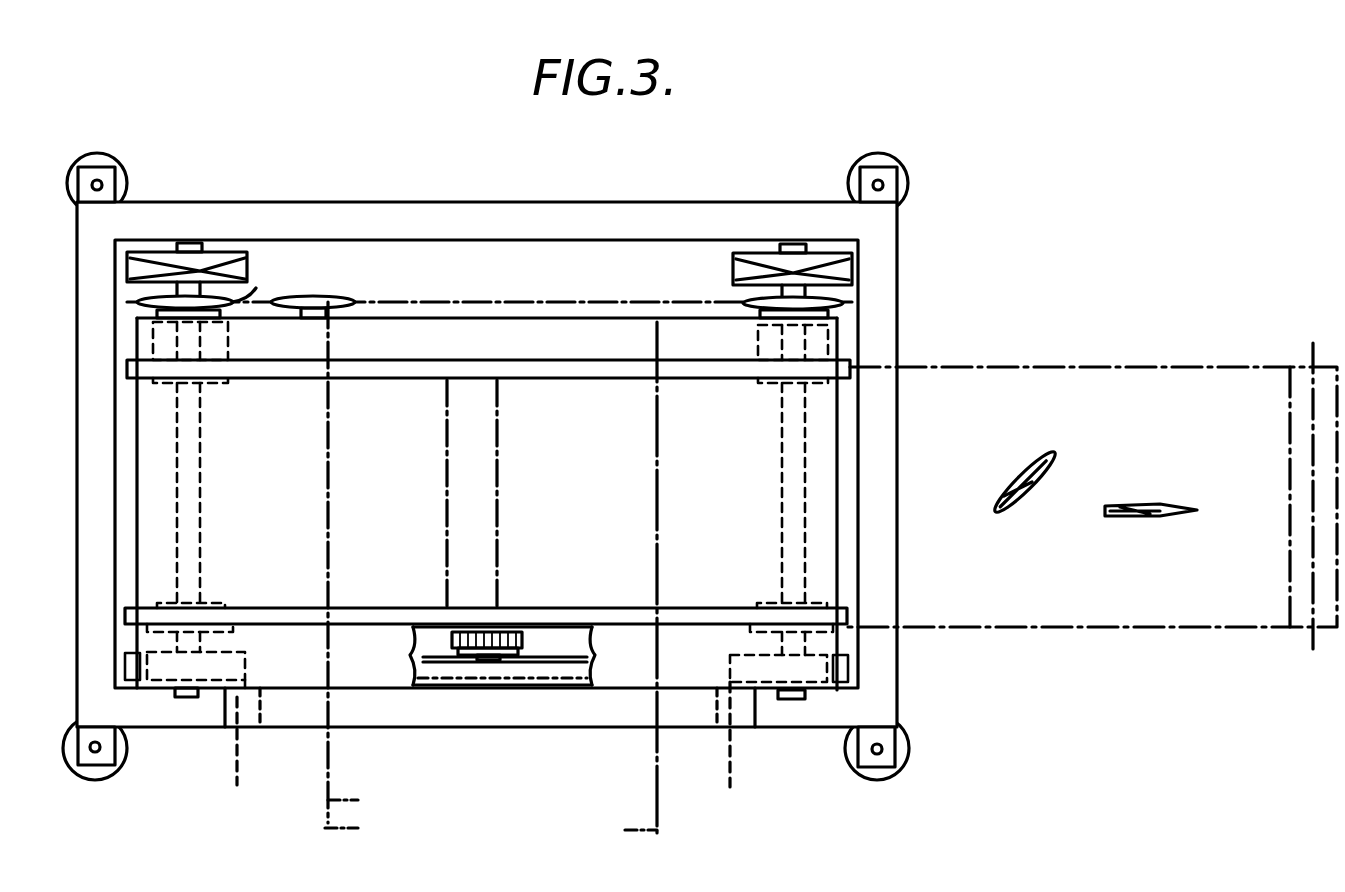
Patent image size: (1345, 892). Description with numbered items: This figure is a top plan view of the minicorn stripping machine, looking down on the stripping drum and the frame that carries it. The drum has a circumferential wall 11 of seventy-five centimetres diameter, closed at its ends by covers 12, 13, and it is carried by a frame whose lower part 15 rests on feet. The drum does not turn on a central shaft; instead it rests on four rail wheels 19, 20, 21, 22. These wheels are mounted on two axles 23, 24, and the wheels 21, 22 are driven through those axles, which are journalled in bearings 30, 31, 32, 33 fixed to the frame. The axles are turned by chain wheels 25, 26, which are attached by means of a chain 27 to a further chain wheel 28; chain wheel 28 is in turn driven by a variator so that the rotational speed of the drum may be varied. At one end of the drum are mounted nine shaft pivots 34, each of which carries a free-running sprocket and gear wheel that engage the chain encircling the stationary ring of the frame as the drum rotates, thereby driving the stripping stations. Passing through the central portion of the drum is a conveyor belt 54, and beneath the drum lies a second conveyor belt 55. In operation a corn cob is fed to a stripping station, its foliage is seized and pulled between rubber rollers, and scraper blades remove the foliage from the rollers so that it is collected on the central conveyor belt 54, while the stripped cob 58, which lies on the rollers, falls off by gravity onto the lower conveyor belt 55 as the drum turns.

The circumferential wall 11 is at (545, 372).
The cover 12 is at (648, 343).
The cover 13 is at (702, 662).
The lower part of frame 15 is at (432, 223).
The rail wheel 19 is at (207, 383).
The rail wheel 20 is at (763, 388).
The rail wheel 21 is at (203, 603).
The rail wheel 22 is at (767, 605).
The axle 23 is at (236, 300).
The axle 24 is at (843, 295).
The chain wheel 25 is at (262, 298).
The chain wheel 26 is at (843, 308).
The chain 27 is at (500, 302).
The chain wheel 28 is at (333, 297).
The bearing 30 is at (140, 263).
The bearing 31 is at (753, 270).
The bearing 32 is at (243, 757).
The bearing 33 is at (734, 752).
The shaft pivot 34 is at (500, 685).
The conveyor belt 54 is at (328, 801).
The conveyor belt 55 is at (1067, 615).
The cob 58 is at (1132, 503).